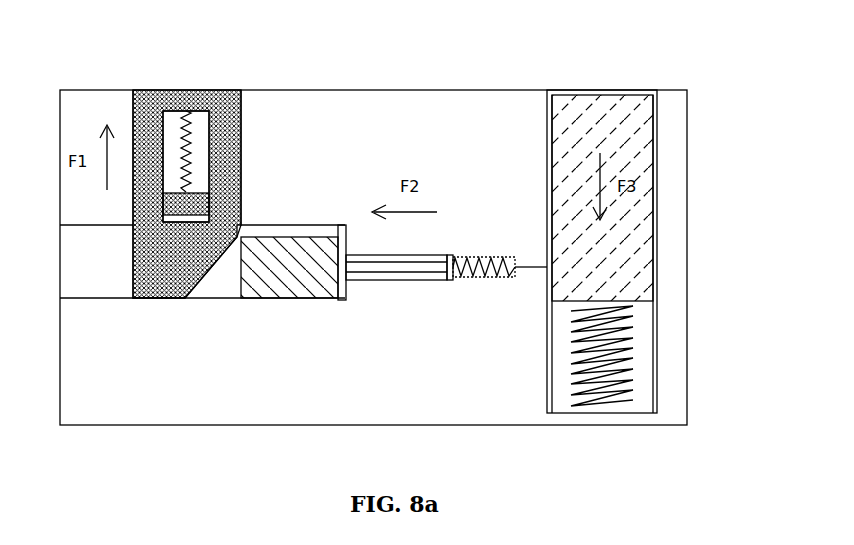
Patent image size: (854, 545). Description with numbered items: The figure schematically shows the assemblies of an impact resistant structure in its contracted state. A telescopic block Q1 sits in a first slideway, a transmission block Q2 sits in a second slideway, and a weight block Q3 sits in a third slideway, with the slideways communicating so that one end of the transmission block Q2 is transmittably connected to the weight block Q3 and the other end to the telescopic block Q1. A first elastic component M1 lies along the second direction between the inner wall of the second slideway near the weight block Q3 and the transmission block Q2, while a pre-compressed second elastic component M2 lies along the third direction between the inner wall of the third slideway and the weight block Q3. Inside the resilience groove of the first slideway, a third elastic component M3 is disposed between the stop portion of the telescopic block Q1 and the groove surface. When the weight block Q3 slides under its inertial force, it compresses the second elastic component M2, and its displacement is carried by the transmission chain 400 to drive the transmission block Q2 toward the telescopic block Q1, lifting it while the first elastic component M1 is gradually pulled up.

The third elastic component M3 is at (187, 120).
The telescopic block Q1 is at (241, 93).
The transmission block Q2 is at (304, 250).
The weight block Q3 is at (634, 142).
The transmission chain 400 is at (385, 270).
The first elastic component M1 is at (475, 272).
The second elastic component M2 is at (617, 360).